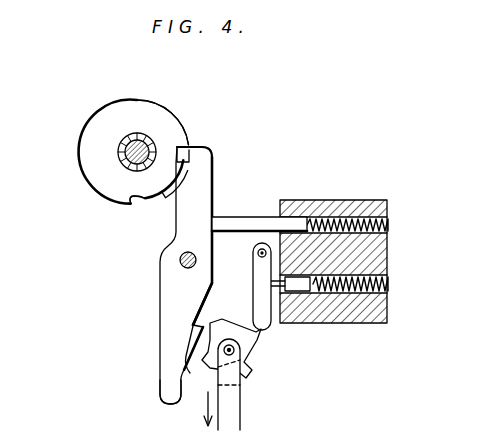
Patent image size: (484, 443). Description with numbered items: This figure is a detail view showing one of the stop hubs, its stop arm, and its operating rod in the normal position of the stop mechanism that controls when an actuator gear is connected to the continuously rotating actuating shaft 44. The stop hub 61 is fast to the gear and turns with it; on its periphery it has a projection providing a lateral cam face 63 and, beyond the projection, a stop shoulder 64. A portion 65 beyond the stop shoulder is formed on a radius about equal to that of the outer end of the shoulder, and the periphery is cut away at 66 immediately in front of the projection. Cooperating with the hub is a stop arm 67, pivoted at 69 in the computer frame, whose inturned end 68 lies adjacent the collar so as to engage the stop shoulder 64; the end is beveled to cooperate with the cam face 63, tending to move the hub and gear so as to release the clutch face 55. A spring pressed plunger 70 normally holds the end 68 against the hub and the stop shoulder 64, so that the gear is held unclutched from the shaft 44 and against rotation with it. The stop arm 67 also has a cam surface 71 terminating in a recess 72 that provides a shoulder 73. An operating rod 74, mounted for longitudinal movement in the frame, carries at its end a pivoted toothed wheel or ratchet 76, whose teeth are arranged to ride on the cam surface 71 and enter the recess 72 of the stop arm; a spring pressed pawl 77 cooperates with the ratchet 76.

The actuating shaft 44 is at (120, 162).
The clutch face 55 is at (125, 168).
The stop hub 61 is at (177, 126).
The cam face 63 is at (176, 186).
The stop shoulder 64 is at (190, 143).
The portion beyond stop shoulder 65 is at (107, 113).
The cut-away 66 is at (134, 209).
The stop arm 67 is at (160, 328).
The inturned end 68 is at (196, 157).
The pivot 69 is at (180, 261).
The spring pressed plunger 70 is at (246, 217).
The cam surface 71 is at (190, 364).
The recess 72 is at (200, 308).
The shoulder 73 is at (198, 327).
The operating rod 74 is at (232, 411).
The ratchet 76 is at (246, 347).
The spring pressed pawl 77 is at (258, 292).